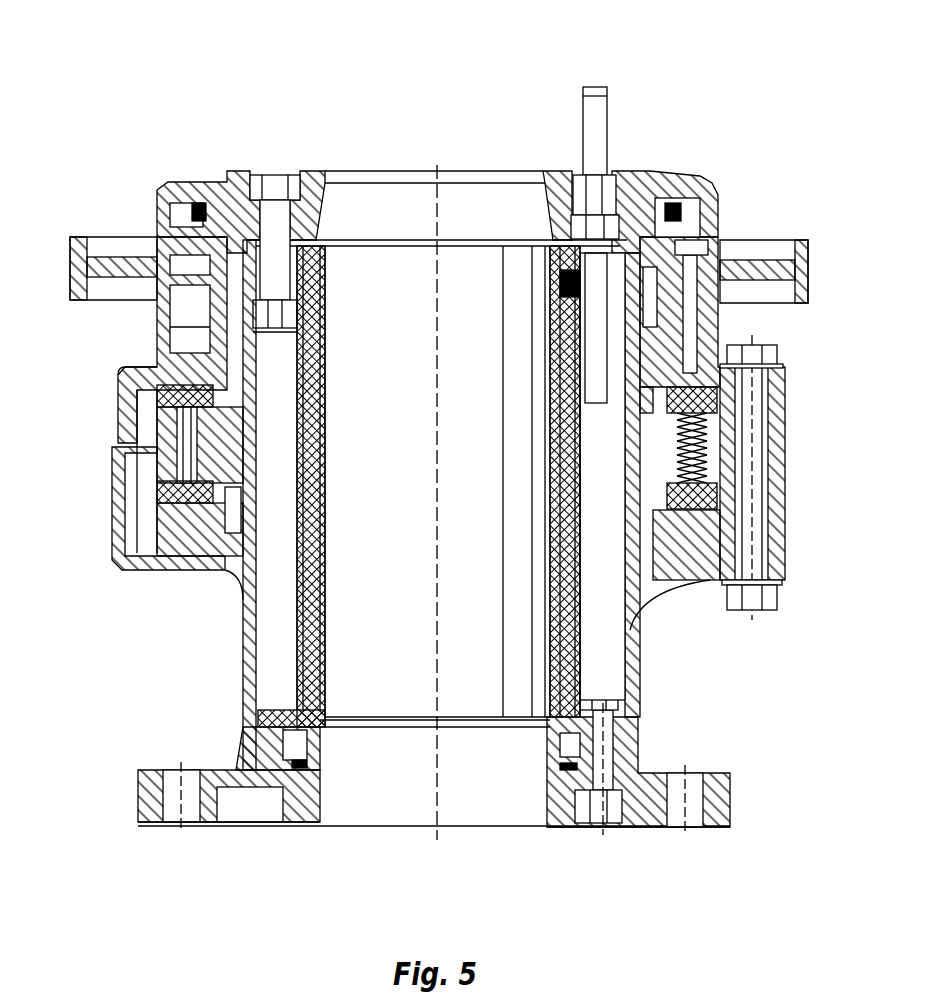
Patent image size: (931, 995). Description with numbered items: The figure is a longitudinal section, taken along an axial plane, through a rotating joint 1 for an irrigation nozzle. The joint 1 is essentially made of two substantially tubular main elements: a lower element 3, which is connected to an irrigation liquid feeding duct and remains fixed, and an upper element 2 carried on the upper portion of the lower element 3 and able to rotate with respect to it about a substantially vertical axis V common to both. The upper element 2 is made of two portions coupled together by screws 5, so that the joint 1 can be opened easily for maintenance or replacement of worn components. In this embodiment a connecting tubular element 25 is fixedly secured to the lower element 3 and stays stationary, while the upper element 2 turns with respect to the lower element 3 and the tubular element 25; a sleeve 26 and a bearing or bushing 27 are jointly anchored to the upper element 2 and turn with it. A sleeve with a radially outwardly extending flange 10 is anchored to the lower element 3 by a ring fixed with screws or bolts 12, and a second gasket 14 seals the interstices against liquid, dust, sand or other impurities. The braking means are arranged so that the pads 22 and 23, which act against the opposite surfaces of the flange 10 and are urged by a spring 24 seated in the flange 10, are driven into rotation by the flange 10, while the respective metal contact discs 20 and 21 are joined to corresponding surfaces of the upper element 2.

The rotating joint 1 is at (340, 240).
The upper element 2 is at (672, 178).
The lower element 3 is at (655, 838).
The screws 5 is at (757, 480).
The flange 10 is at (157, 448).
The screws or bolts 12 is at (292, 175).
The second gasket 14 is at (680, 207).
The contact disc 20 is at (137, 367).
The contact disc 21 is at (127, 567).
The pad 22 is at (140, 393).
The pad 23 is at (155, 487).
The spring 24 is at (707, 417).
The connecting tubular element 25 is at (487, 720).
The sleeve 26 is at (287, 577).
The bearing or bushing 27 is at (567, 413).
The vertical axis V is at (440, 585).